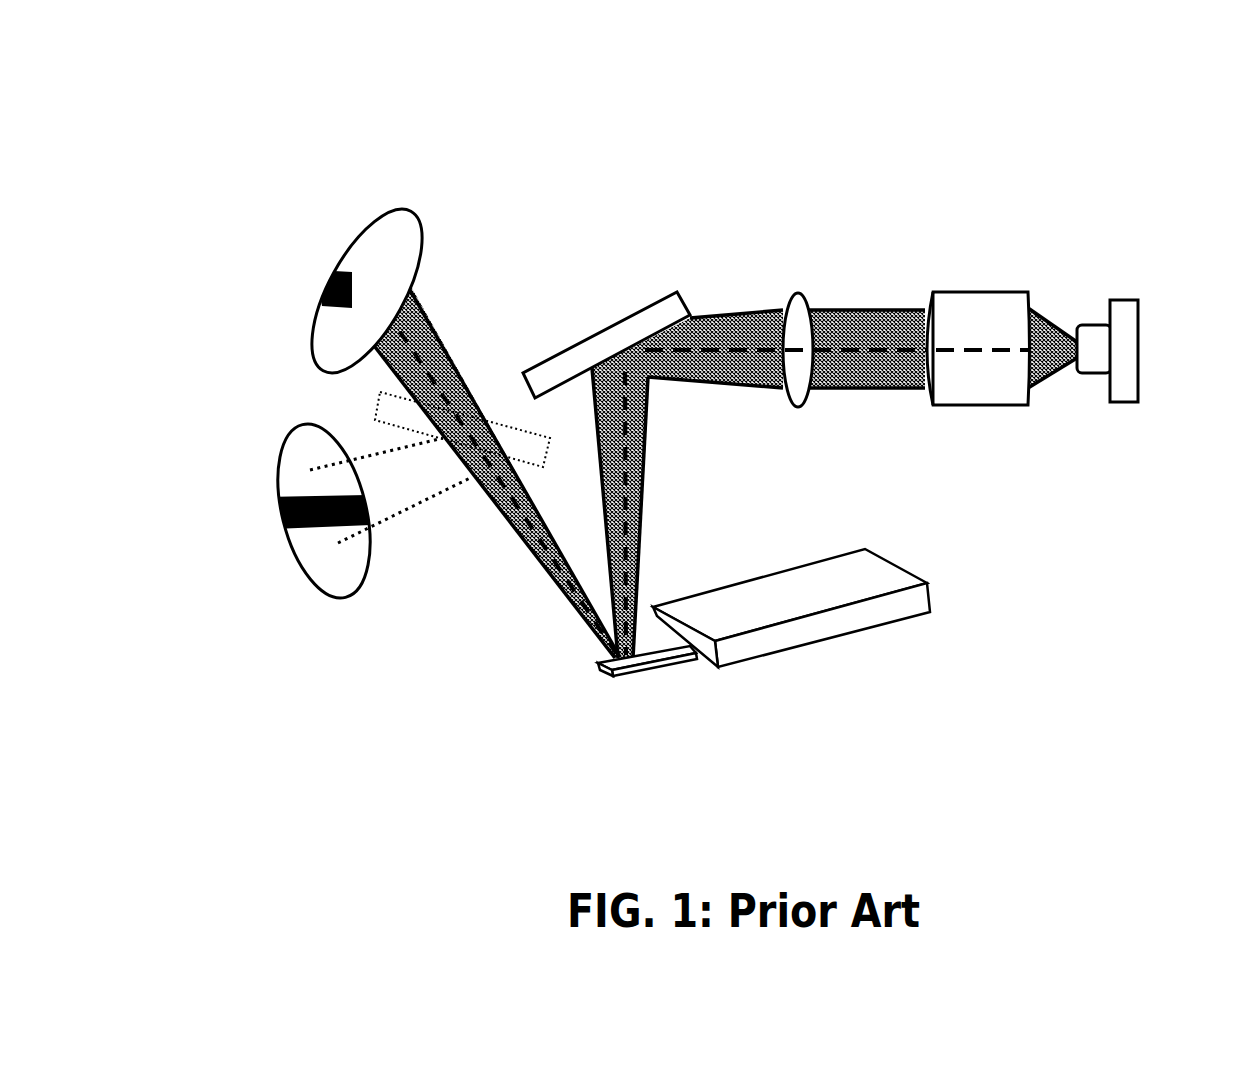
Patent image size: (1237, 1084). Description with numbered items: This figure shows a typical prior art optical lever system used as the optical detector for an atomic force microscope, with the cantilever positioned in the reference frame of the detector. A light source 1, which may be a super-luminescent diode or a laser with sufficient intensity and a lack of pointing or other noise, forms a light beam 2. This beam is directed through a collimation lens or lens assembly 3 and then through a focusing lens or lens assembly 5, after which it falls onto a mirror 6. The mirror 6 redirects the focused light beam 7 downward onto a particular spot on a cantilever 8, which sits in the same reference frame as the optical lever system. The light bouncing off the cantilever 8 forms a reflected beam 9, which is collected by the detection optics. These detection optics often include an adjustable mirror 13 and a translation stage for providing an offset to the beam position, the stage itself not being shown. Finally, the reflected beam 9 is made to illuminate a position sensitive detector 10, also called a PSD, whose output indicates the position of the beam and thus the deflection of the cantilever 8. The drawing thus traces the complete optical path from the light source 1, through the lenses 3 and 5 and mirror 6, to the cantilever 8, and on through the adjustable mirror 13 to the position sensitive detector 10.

The light source 1 is at (1128, 409).
The light beam 2 is at (1050, 390).
The collimation lens or lens assembly 3 is at (985, 315).
The focusing lens or lens assembly 5 is at (798, 283).
The mirror 6 is at (618, 315).
The focused light beam 7 is at (647, 520).
The cantilever 8 is at (649, 677).
The reflected beam 9 is at (553, 590).
The position sensitive detector 10 is at (275, 441).
The adjustable mirror 13 is at (510, 418).